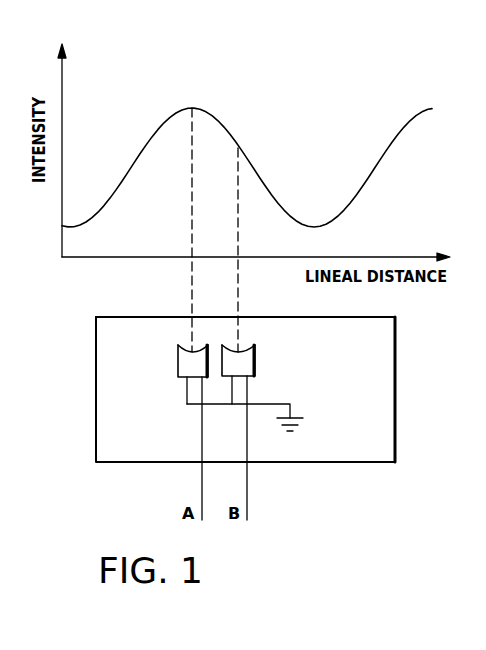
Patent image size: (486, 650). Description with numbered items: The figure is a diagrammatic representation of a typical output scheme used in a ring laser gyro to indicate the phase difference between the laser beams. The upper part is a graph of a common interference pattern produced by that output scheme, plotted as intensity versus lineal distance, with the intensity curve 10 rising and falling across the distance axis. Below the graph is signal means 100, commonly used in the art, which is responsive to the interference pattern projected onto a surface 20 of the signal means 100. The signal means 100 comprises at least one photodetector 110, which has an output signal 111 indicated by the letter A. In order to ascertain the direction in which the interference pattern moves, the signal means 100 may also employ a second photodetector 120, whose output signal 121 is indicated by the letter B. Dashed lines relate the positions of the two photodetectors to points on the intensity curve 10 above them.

The light intensity pattern curve 10 is at (380, 158).
The surface 20 is at (337, 317).
The signal means 100 is at (397, 392).
The photodetector 110 is at (176, 361).
The second photodetector 120 is at (256, 370).
The output signal 111 is at (202, 478).
The output signal 121 is at (247, 498).